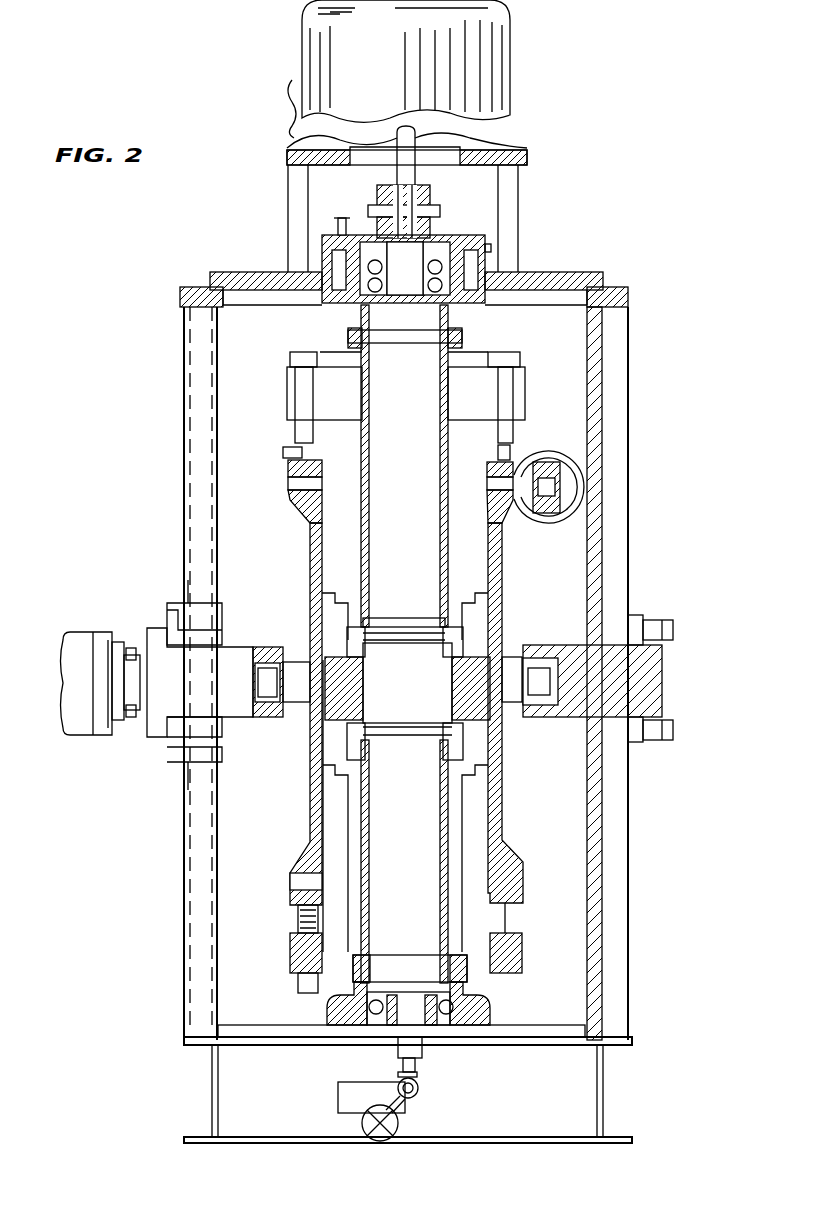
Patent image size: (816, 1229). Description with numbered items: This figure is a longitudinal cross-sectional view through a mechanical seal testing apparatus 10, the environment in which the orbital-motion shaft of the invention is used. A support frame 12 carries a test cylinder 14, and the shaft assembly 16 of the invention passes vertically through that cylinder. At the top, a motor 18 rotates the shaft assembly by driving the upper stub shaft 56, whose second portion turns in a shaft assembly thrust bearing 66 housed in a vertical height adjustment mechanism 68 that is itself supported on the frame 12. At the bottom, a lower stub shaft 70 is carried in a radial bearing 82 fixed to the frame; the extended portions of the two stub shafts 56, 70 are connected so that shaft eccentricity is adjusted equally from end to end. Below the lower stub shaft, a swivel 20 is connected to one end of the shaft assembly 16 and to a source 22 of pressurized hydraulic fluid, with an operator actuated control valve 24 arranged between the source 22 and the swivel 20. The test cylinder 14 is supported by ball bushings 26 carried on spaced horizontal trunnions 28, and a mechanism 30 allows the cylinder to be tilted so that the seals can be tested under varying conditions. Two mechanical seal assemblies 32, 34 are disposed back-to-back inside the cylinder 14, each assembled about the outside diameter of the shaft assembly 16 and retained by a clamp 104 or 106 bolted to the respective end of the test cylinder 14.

The mechanical seal testing apparatus 10 is at (640, 160).
The support frame 12 is at (633, 878).
The test cylinder 14 is at (503, 610).
The shaft assembly 16 is at (447, 586).
The motor 18 is at (510, 75).
The swivel 20 is at (401, 1091).
The source of pressurized hydraulic fluid 22 is at (343, 1095).
The operator actuated control valve 24 is at (363, 1140).
The ball bushings 26 is at (298, 650).
The horizontal trunnions 28 is at (250, 648).
The tilting mechanism 30 is at (108, 633).
The mechanical seal assembly 32 is at (474, 844).
The mechanical seal assembly 34 is at (474, 520).
The upper stub shaft 56 is at (405, 262).
The shaft assembly thrust bearing 66 is at (345, 305).
The vertical height adjustment mechanism 68 is at (487, 276).
The lower stub shaft 70 is at (408, 993).
The radial bearing 82 is at (445, 1000).
The clamp 104 is at (290, 400).
The clamp 106 is at (290, 963).